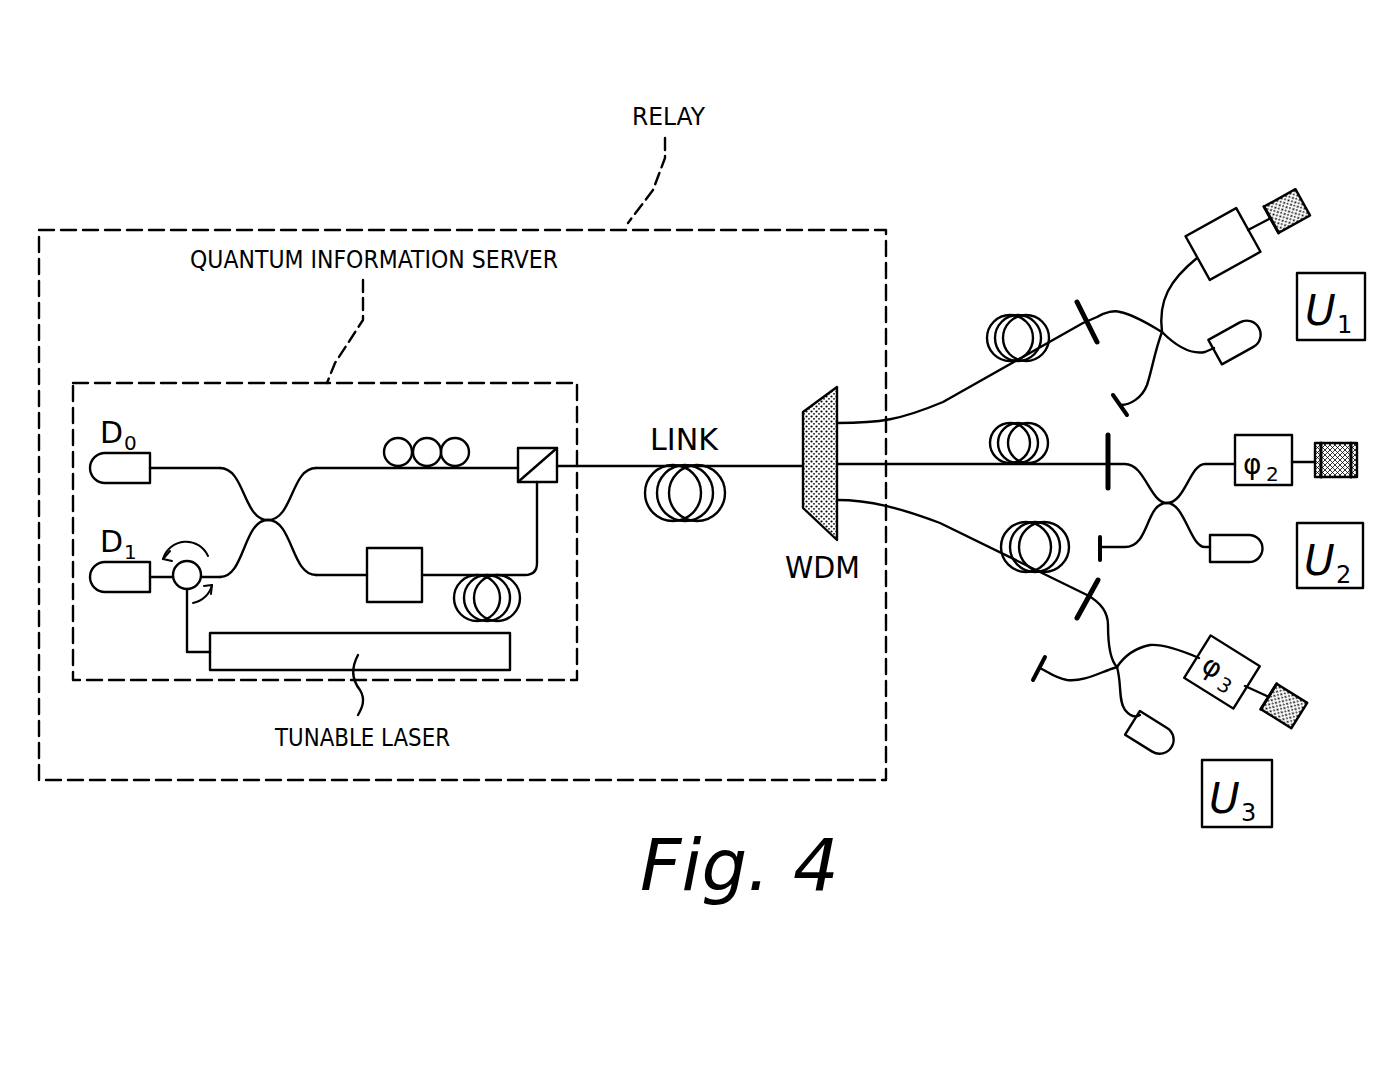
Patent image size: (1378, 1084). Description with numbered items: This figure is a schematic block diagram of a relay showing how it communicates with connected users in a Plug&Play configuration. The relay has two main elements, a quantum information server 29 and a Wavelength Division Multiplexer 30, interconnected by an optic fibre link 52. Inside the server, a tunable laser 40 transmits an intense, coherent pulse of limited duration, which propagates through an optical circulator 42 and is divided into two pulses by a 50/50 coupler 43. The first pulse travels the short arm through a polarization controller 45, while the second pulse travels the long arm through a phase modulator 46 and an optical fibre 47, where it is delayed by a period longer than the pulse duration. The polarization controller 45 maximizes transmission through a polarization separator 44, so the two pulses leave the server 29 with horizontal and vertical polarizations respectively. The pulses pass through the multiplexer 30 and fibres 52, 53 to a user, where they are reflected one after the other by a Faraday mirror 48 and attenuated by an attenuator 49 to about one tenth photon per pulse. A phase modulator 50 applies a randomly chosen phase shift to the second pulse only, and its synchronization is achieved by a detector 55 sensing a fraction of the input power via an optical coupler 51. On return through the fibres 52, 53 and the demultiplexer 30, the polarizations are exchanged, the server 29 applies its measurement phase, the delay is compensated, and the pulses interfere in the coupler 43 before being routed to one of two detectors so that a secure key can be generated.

The quantum information server 29 is at (142, 383).
The Wavelength Division Multiplexer 30 is at (820, 407).
The tunable laser 40 is at (223, 660).
The optical circulator 42 is at (182, 584).
The 50/50 coupler 43 is at (268, 515).
The polarization separator 44 is at (557, 448).
The polarization controller 45 is at (427, 430).
The phase modulator 46 is at (408, 553).
The optical fibre 47 is at (533, 572).
The Faraday mirror 48 is at (1282, 192).
The attenuator 49 is at (1082, 307).
The phase modulator 50 is at (1213, 223).
The optical coupler 51 is at (1163, 345).
The optic fibre link 52 is at (763, 467).
The fibre 53 is at (942, 400).
The detector 55 is at (1253, 338).